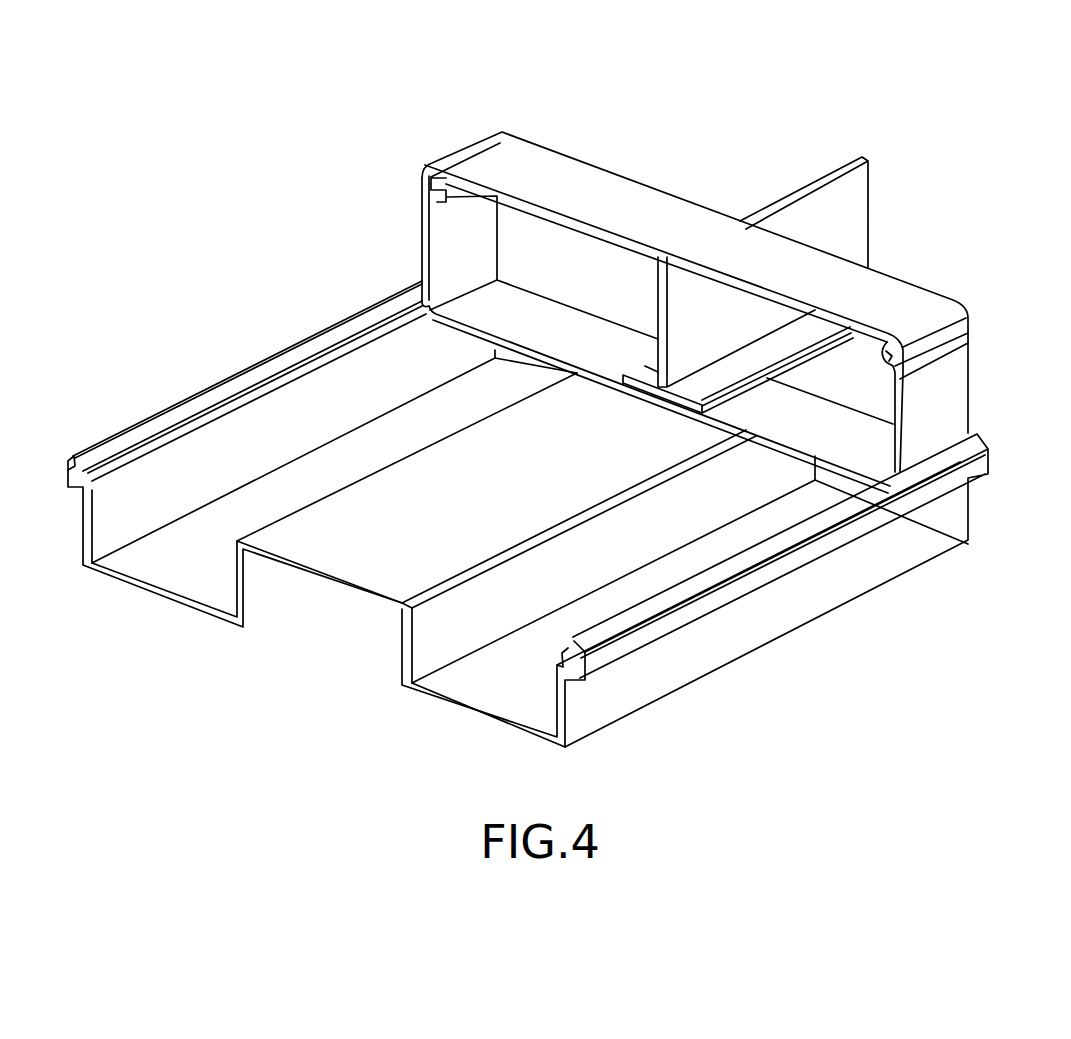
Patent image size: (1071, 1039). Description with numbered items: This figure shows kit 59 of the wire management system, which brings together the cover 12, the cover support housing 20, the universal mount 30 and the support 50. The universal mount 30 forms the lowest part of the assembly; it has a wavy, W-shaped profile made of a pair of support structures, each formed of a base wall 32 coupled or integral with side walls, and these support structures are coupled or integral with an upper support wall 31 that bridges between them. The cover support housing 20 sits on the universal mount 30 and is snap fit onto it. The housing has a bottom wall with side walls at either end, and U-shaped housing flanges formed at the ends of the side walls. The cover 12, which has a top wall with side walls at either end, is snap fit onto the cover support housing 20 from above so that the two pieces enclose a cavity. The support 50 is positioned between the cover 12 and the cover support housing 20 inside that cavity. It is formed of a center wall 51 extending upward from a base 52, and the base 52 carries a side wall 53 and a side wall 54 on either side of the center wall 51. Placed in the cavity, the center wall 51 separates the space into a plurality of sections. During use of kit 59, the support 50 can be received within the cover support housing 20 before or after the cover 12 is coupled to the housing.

The kit 59 is at (530, 41).
The cover 12 is at (667, 289).
The cover support housing 20 is at (425, 233).
The universal mount 30 is at (528, 532).
The upper support wall 31 is at (352, 566).
The base wall 32 is at (165, 596).
The support 50 is at (785, 256).
The center wall 51 is at (850, 209).
The base 52 is at (626, 374).
The side wall 53 is at (780, 350).
The side wall 54 is at (648, 364).